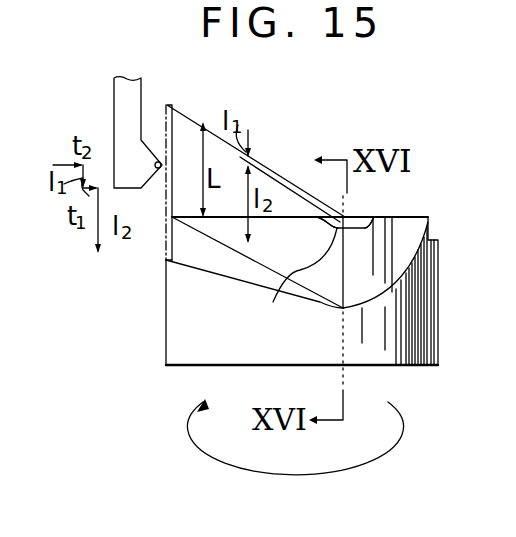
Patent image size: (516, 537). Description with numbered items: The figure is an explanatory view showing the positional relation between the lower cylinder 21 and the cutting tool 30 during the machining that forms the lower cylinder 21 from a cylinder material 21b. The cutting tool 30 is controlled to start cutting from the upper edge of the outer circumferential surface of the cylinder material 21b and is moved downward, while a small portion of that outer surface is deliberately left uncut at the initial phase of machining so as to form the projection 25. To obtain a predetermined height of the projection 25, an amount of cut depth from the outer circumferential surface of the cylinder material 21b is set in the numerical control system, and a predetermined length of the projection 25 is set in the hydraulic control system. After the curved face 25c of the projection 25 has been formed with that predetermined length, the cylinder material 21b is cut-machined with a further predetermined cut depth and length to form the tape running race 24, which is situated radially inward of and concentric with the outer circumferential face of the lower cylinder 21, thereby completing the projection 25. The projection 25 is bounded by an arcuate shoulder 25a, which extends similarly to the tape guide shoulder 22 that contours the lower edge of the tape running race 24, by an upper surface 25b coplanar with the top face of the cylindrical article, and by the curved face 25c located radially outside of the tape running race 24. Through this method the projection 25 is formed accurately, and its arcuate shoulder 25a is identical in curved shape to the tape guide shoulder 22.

The cutting tool 30 is at (114, 104).
The tape guide shoulder 22 is at (213, 277).
The lower cylinder 21 is at (438, 308).
The cylinder material 21b is at (172, 348).
The tape running race 24 is at (407, 235).
The projection 25 is at (368, 223).
The arcuate shoulder 25a is at (288, 283).
The upper surface 25b is at (378, 218).
The curved face 25c is at (350, 222).